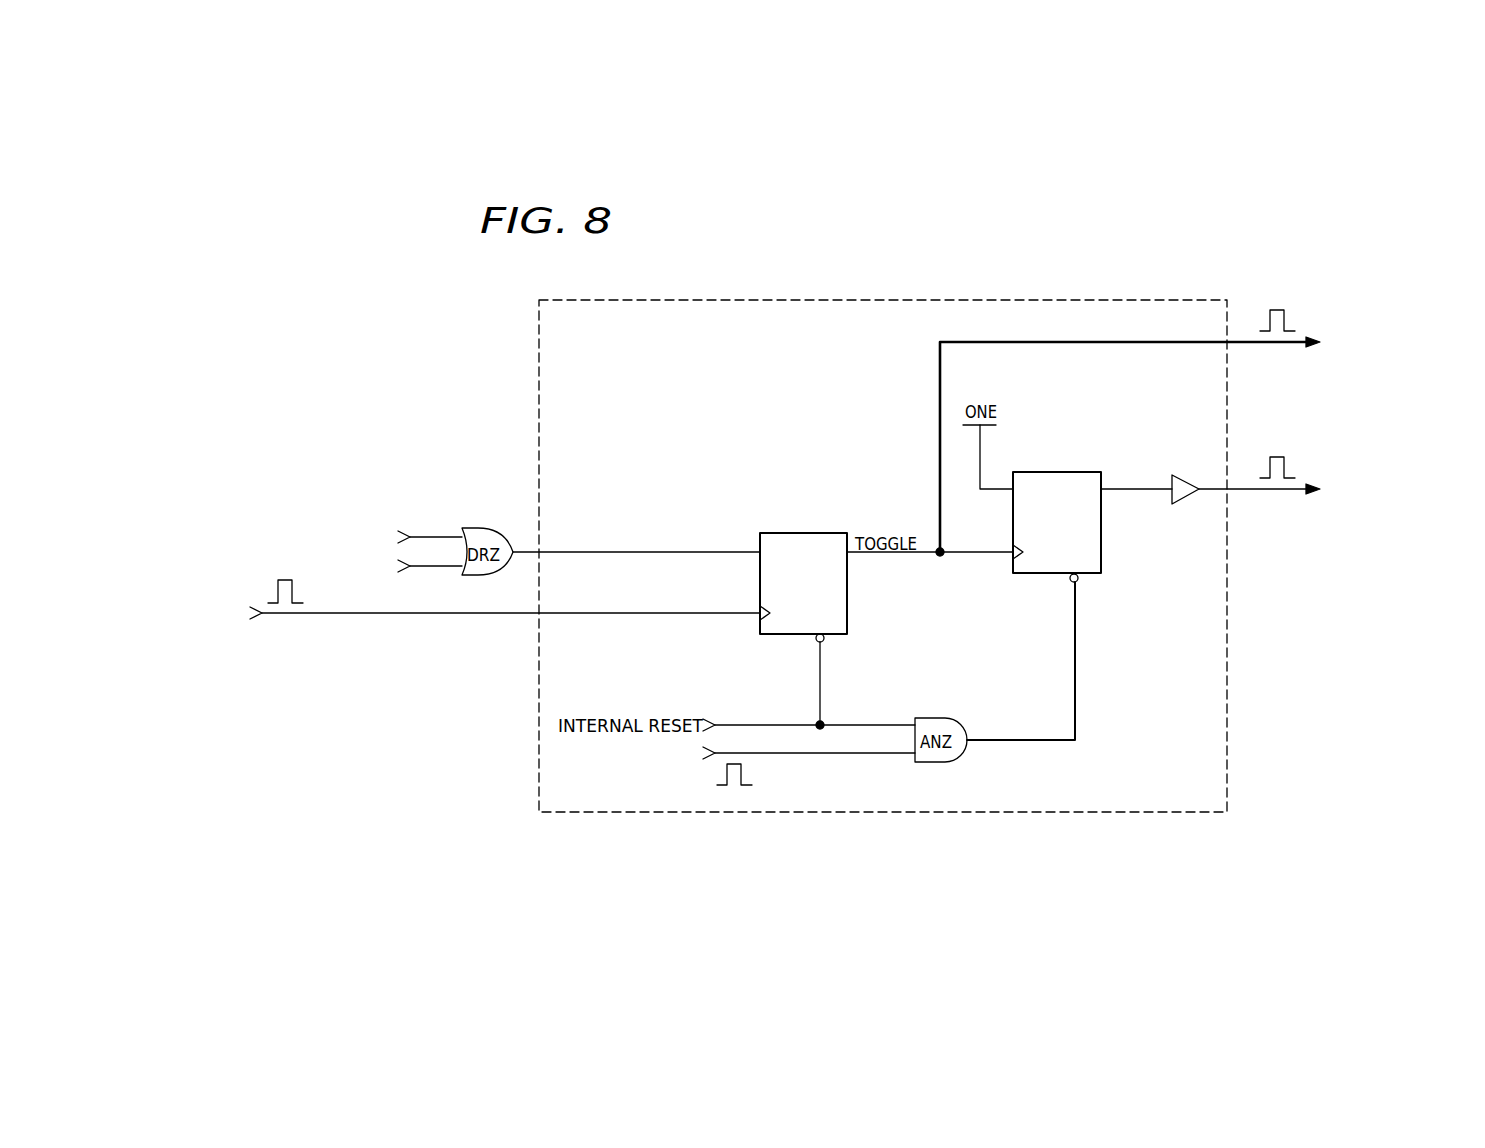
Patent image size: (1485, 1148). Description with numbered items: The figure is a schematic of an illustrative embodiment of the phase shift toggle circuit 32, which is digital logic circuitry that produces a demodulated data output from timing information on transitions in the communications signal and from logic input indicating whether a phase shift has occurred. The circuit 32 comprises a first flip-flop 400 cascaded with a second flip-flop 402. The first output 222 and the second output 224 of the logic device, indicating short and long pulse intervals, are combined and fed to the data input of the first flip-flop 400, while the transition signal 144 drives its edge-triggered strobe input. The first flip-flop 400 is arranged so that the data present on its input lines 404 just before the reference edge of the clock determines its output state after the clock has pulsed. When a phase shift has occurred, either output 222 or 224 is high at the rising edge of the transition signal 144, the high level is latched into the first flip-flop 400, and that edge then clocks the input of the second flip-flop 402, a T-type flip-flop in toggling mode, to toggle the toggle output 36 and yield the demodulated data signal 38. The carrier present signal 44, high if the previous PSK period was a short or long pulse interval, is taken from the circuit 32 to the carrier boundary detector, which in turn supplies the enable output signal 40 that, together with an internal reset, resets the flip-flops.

The phase shift toggle circuit 32 is at (797, 298).
The carrier present signal 44 is at (1278, 309).
The demodulated data signal 38 is at (1277, 455).
The toggle output 36 is at (1288, 492).
The second flip-flop 402 is at (1075, 470).
The input lines 404 is at (737, 548).
The first flip-flop 400 is at (804, 533).
The first output 222 is at (437, 537).
The second output 224 is at (435, 568).
The transition signal 144 is at (282, 580).
The enable output signal 40 is at (745, 783).